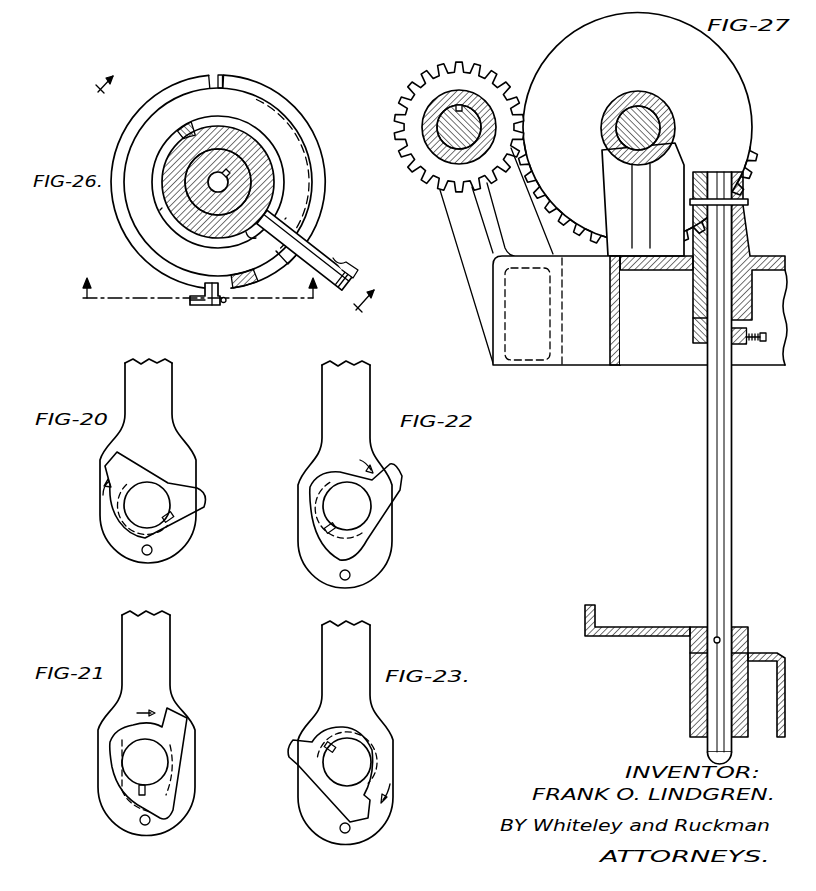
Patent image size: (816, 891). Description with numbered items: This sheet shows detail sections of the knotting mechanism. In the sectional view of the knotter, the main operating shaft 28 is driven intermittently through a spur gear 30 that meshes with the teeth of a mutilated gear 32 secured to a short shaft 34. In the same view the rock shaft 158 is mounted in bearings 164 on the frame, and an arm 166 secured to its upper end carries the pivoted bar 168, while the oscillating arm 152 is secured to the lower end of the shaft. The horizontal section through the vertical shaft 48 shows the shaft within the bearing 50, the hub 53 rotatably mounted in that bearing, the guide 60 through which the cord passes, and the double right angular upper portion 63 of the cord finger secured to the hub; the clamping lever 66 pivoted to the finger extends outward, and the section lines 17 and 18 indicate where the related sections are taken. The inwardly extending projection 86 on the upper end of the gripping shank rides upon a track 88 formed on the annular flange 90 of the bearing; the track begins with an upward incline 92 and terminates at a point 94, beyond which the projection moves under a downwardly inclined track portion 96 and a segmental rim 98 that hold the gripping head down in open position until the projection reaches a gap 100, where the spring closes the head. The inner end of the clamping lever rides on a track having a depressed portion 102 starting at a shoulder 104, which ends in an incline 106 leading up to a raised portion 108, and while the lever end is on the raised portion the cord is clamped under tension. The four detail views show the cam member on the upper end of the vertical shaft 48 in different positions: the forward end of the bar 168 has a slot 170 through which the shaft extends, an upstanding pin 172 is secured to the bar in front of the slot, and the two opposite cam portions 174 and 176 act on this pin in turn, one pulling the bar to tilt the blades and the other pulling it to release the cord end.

In FIG. 26, the section line 17— 17 is at (246, 186).
In FIG. 26, the section line 18— 18 is at (200, 306).
In FIG. 27, the main operating shaft 28 is at (446, 124).
In FIG. 27, the spur gear 30 is at (454, 80).
In FIG. 27, the mutilated gear 32 is at (720, 70).
In FIG. 27, the short shaft 34 is at (658, 120).
In FIG. 26, the vertical shaft 48 is at (258, 160).
In FIG. 20, the vertical shaft 48 is at (135, 508).
In FIG. 22, the vertical shaft 48 is at (343, 508).
In FIG. 21, the vertical shaft 48 is at (136, 763).
In FIG. 23, the vertical shaft 48 is at (352, 760).
In FIG. 26, the bearing 50 is at (252, 177).
In FIG. 26, the hub 53 is at (268, 181).
In FIG. 26, the guide 60 is at (356, 265).
In FIG. 26, the double right angular upper portion 63 is at (285, 219).
In FIG. 26, the clamping lever 66 is at (300, 245).
In FIG. 26, the projection 86 is at (212, 307).
In FIG. 26, the track 88 is at (160, 269).
In FIG. 26, the annular flange 90 is at (128, 183).
In FIG. 26, the upward incline 92 is at (250, 287).
In FIG. 26, the terminal point of track 94 is at (205, 74).
In FIG. 26, the downwardly inclined track portion 96 is at (223, 82).
In FIG. 26, the segmental rim 98 is at (289, 107).
In FIG. 26, the gap 100 is at (273, 272).
In FIG. 26, the depressed portion 102 is at (240, 124).
In FIG. 26, the shoulder 104 is at (250, 243).
In FIG. 26, the incline 106 is at (182, 128).
In FIG. 26, the raised portion 108 is at (160, 210).
In FIG. 27, the oscillating arm 152 is at (632, 626).
In FIG. 27, the rock shaft 158 is at (730, 539).
In FIG. 27, the bearings 164 is at (693, 312).
In FIG. 27, the arm 166 is at (747, 216).
In FIG. 20, the bar 168 is at (158, 405).
In FIG. 22, the bar 168 is at (360, 388).
In FIG. 21, the bar 168 is at (160, 648).
In FIG. 23, the bar 168 is at (360, 640).
In FIG. 20, the slot 170 is at (158, 467).
In FIG. 22, the slot 170 is at (367, 541).
In FIG. 21, the slot 170 is at (140, 726).
In FIG. 23, the slot 170 is at (323, 799).
In FIG. 20, the upstanding pin 172 is at (149, 556).
In FIG. 22, the upstanding pin 172 is at (342, 580).
In FIG. 21, the upstanding pin 172 is at (140, 824).
In FIG. 23, the upstanding pin 172 is at (343, 833).
In FIG. 20, the cam portion 174 is at (204, 496).
In FIG. 22, the cam portion 174 is at (337, 560).
In FIG. 21, the cam portion 174 is at (178, 820).
In FIG. 23, the cam portion 174 is at (291, 747).
In FIG. 20, the cam portion 176 is at (106, 464).
In FIG. 22, the cam portion 176 is at (400, 476).
In FIG. 21, the cam portion 176 is at (181, 715).
In FIG. 23, the cam portion 176 is at (368, 820).